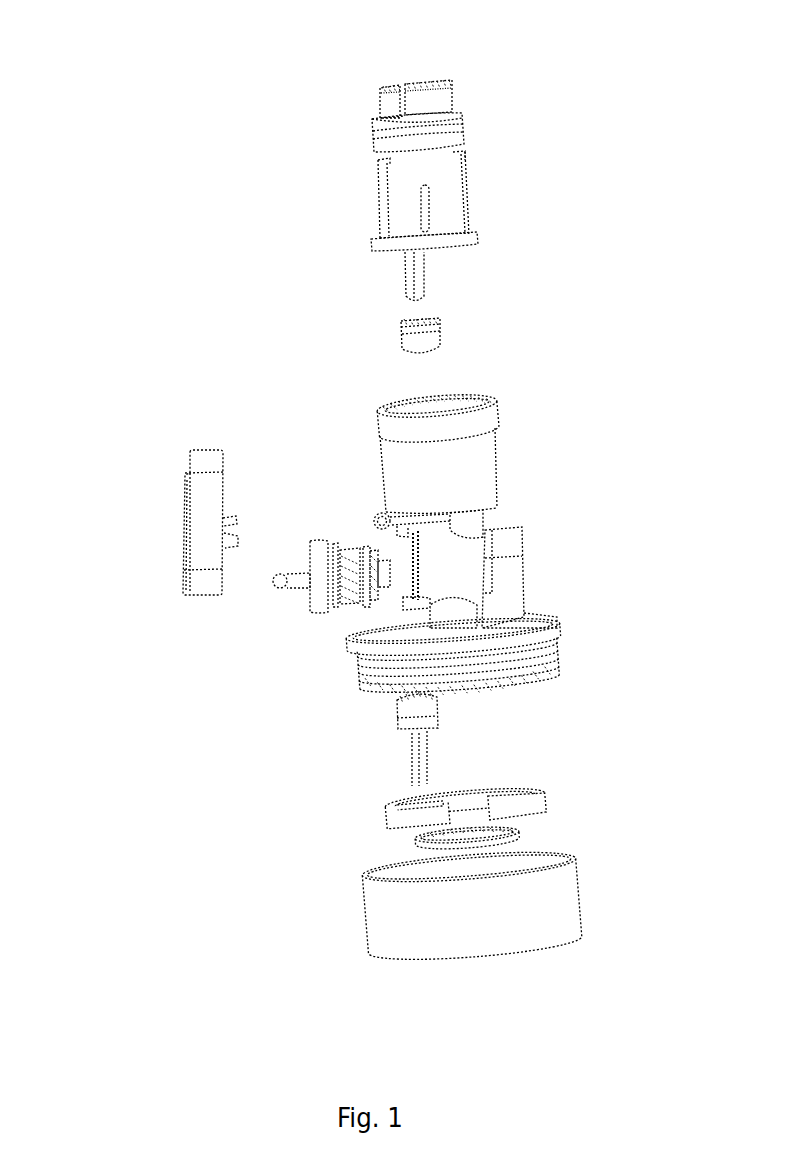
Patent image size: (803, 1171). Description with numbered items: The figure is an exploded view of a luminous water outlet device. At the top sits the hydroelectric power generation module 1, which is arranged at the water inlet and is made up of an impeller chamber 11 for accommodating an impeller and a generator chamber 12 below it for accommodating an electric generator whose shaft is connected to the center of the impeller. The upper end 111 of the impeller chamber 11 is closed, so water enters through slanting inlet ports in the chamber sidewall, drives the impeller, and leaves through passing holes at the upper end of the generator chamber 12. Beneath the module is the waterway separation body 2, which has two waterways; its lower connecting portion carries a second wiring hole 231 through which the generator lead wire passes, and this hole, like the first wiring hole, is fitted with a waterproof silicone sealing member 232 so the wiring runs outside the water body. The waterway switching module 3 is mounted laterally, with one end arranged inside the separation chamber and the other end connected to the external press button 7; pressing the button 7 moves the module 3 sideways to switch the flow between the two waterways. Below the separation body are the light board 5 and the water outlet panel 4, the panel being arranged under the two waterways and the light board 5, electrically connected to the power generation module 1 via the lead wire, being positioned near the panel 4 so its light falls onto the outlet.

The hydroelectric power generation module 1 is at (379, 115).
The impeller chamber 11 is at (452, 110).
The upper end 111 is at (411, 84).
The generator chamber 12 is at (454, 193).
The waterway separation body 2 is at (497, 426).
The second wiring hole 231 is at (403, 634).
The waterproof silicone sealing member 232 is at (400, 347).
The waterway switching module 3 is at (316, 614).
The water outlet panel 4 is at (581, 939).
The light board 5 is at (384, 794).
The external press button 7 is at (189, 474).